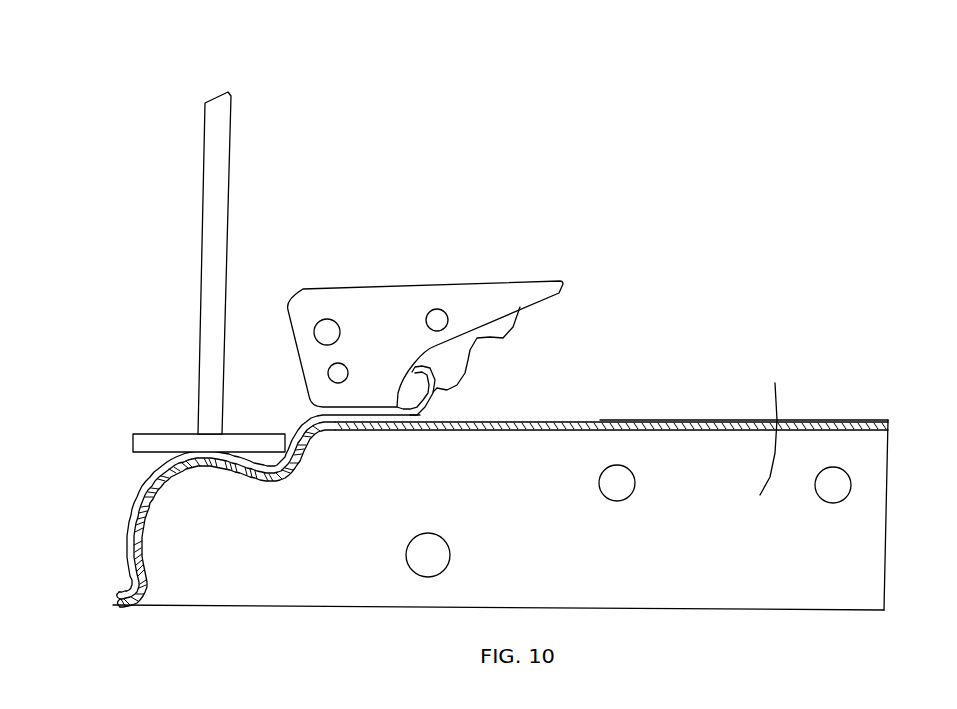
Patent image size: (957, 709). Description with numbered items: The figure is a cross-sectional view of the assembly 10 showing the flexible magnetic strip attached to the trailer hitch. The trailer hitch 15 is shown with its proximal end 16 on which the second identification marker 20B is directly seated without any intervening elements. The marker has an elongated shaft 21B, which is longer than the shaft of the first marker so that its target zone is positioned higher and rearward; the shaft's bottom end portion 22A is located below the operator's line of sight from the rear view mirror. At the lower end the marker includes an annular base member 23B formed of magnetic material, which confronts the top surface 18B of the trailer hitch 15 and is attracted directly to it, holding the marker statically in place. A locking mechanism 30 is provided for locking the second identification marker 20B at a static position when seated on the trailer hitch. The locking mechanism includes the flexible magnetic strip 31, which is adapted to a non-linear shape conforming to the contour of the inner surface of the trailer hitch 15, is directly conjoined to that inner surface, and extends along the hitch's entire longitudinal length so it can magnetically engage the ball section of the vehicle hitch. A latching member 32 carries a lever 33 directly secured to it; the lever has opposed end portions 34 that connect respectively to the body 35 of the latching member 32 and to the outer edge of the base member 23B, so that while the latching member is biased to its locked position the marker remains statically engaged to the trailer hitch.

The assembly 10 is at (78, 112).
The trailer hitch 15 is at (744, 465).
The proximal end of the trailer hitch 16 is at (500, 550).
The top surface of the trailer hitch 18B is at (200, 455).
The second identification marker 20B is at (276, 251).
The shaft of the second identification marker 21B is at (166, 217).
The bottom end portion of the shaft 22A is at (203, 425).
The base member of the second identification marker 23B is at (137, 440).
The locking mechanism 30 is at (445, 297).
The flexible magnetic strip 31 is at (578, 562).
The latching member 32 is at (393, 287).
The lever 33 is at (268, 505).
The opposed end portions of the lever 34 is at (379, 380).
The body of the latching member 35 is at (347, 260).